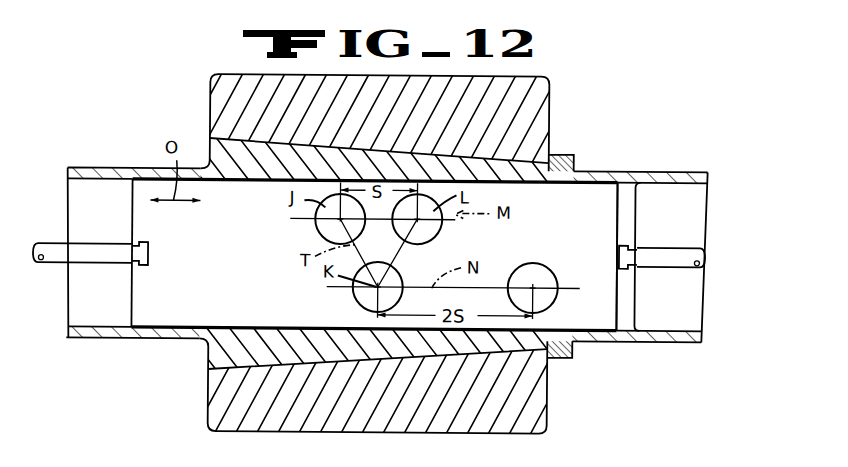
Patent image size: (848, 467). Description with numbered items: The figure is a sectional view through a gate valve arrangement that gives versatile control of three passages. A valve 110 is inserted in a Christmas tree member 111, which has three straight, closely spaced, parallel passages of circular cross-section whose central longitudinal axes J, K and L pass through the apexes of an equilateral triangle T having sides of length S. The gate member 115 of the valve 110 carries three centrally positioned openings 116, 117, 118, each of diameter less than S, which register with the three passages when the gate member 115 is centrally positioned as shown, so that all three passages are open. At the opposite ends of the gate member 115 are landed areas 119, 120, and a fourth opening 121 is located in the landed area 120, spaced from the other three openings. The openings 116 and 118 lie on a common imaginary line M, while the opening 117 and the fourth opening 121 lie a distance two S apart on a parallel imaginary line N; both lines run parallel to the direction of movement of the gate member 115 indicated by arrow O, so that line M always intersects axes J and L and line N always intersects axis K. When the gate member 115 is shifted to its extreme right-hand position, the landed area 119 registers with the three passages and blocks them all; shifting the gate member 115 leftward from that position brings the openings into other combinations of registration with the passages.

The valve 110 is at (594, 167).
The Christmas tree member 111 is at (548, 89).
The gate member 115 is at (174, 323).
The opening 116 is at (319, 229).
The opening 117 is at (355, 292).
The opening 118 is at (437, 228).
The landed area 119 is at (243, 253).
The landed area 120 is at (557, 255).
The fourth opening 121 is at (556, 298).